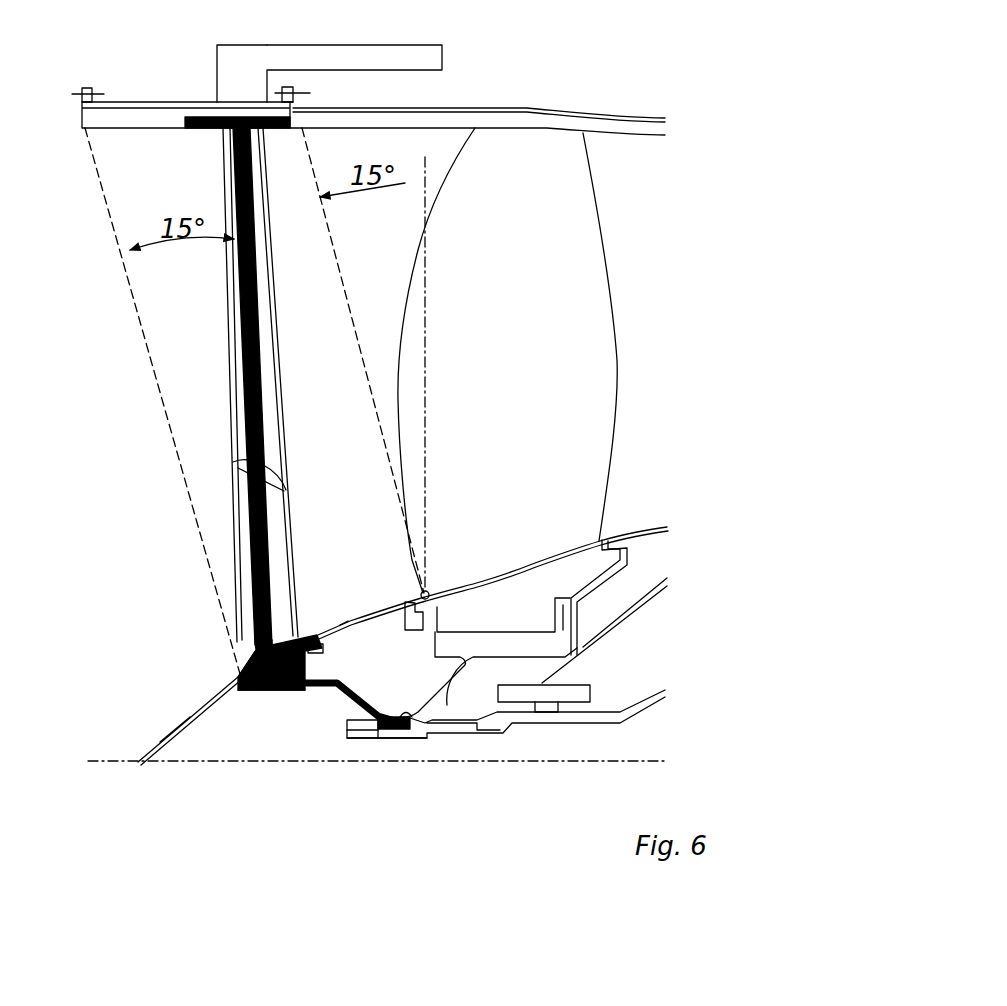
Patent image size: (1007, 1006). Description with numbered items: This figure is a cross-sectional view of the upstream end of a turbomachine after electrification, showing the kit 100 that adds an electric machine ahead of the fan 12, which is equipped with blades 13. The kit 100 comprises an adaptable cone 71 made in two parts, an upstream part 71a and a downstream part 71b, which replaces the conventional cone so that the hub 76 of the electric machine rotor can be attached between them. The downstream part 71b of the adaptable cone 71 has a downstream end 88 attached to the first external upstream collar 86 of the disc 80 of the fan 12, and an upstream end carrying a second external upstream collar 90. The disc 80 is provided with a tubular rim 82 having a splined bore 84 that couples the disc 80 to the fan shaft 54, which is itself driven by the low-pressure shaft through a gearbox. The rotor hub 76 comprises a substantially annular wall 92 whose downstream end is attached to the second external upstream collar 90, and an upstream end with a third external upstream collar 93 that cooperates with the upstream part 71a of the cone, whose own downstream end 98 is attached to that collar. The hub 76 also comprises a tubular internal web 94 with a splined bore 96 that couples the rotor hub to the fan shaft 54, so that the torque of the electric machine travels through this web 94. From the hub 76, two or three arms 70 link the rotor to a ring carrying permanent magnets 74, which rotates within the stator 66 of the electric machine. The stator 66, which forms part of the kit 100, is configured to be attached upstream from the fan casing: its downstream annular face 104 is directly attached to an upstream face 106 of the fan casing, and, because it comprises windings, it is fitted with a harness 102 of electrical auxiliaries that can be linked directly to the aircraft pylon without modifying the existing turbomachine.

The fan 12 is at (630, 325).
The blades 13 is at (468, 360).
The fan shaft 54 is at (472, 727).
The stator 66 is at (142, 105).
The arms 70 is at (258, 383).
The adaptable cone 71 is at (120, 650).
The upstream part of the adaptable cone 71a is at (175, 730).
The downstream part of the adaptable cone 71b is at (340, 618).
The permanent magnets 74 is at (200, 130).
The hub of the rotor of the electric machine 76 is at (252, 693).
The disc 80 is at (478, 632).
The tubular rim 82 is at (519, 635).
The splined bore 84 is at (438, 715).
The first external upstream collar 86 is at (412, 600).
The downstream end 88 is at (392, 620).
The second external upstream collar 90 is at (324, 649).
The annular wall 92 is at (257, 612).
The third external upstream collar 93 is at (238, 692).
The tubular internal web 94 is at (288, 710).
The splined bore 96 is at (363, 710).
The downstream end 98 is at (237, 677).
The kit 100 is at (112, 387).
The harness 102 is at (214, 62).
The downstream annular face 104 is at (265, 100).
The upstream face 106 is at (295, 104).